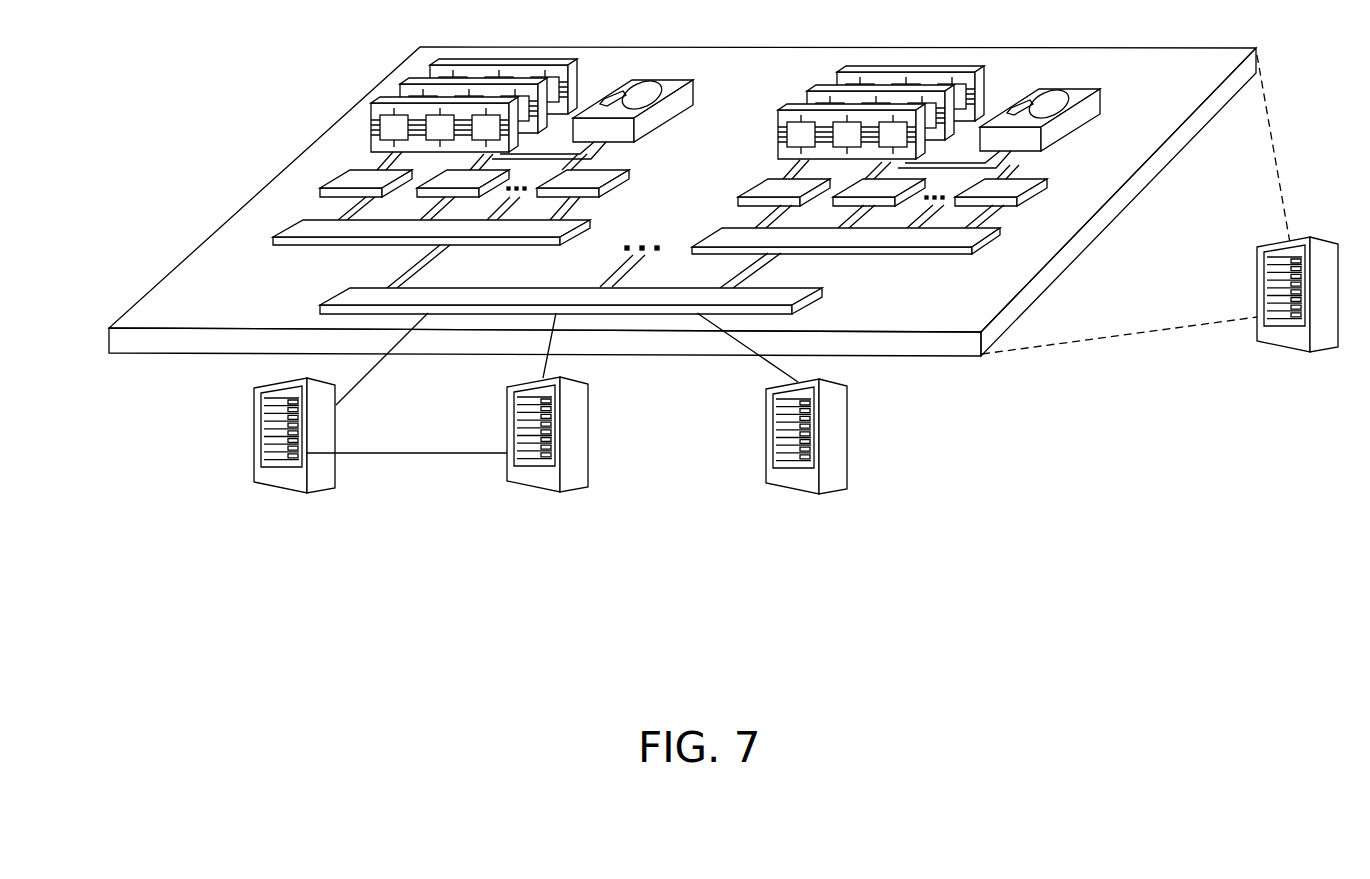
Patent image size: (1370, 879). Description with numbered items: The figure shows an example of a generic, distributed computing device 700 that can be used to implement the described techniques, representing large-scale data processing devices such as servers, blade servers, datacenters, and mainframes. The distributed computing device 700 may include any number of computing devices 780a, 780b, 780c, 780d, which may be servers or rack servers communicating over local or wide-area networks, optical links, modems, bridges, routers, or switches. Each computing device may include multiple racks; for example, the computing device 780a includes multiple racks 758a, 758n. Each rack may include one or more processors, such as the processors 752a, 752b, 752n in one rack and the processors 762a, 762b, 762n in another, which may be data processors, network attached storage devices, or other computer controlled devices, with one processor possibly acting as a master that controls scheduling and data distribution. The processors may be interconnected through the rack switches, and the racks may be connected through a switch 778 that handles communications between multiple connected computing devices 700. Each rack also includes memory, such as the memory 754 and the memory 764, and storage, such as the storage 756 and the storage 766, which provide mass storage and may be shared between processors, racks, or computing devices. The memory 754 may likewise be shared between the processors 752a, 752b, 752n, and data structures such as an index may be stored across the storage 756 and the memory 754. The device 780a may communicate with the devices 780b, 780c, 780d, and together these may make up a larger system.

The computing device 700 is at (266, 66).
The processor 752a is at (358, 178).
The processor 752b is at (448, 181).
The processor 752n is at (598, 183).
The memory 754 is at (507, 62).
The storage 756 is at (660, 80).
The rack 758a is at (310, 232).
The rack 758n is at (956, 238).
The processor 762a is at (780, 190).
The processor 762b is at (868, 194).
The processor 762n is at (1003, 192).
The memory 764 is at (913, 70).
The storage 766 is at (1065, 88).
The switch 778 is at (350, 297).
The computing device 780a is at (1257, 262).
The computing device 780b is at (254, 431).
The computing device 780c is at (507, 426).
The computing device 780d is at (766, 437).